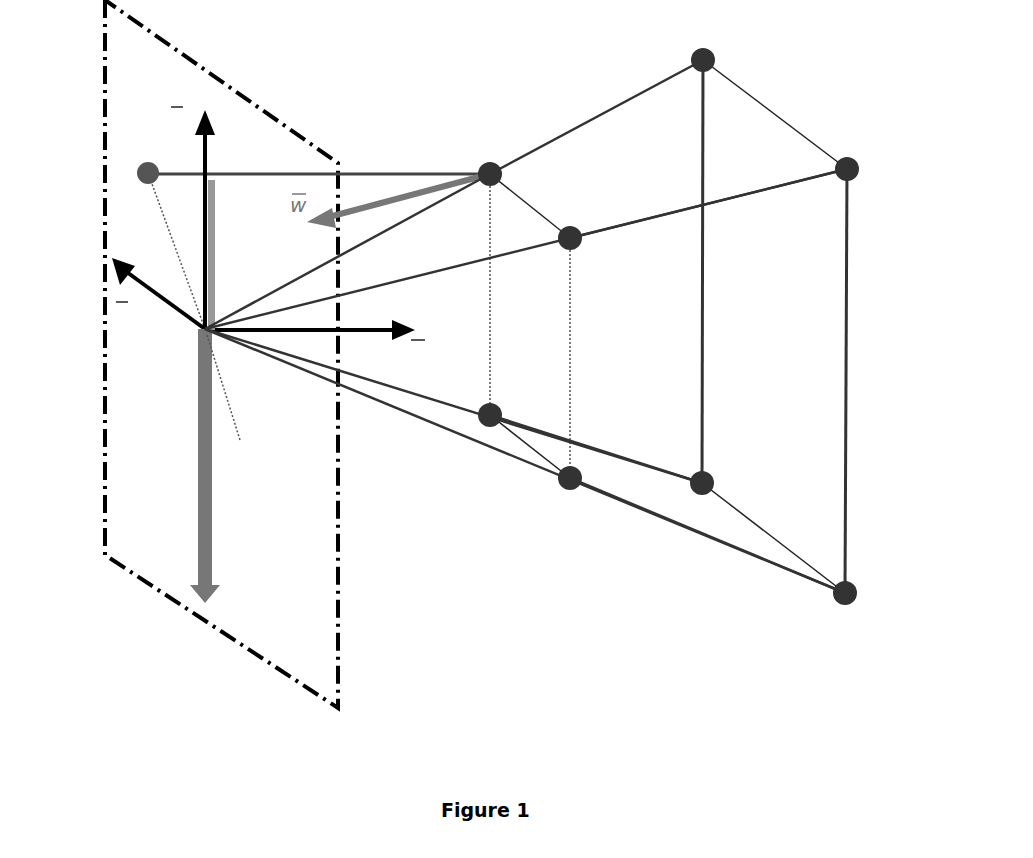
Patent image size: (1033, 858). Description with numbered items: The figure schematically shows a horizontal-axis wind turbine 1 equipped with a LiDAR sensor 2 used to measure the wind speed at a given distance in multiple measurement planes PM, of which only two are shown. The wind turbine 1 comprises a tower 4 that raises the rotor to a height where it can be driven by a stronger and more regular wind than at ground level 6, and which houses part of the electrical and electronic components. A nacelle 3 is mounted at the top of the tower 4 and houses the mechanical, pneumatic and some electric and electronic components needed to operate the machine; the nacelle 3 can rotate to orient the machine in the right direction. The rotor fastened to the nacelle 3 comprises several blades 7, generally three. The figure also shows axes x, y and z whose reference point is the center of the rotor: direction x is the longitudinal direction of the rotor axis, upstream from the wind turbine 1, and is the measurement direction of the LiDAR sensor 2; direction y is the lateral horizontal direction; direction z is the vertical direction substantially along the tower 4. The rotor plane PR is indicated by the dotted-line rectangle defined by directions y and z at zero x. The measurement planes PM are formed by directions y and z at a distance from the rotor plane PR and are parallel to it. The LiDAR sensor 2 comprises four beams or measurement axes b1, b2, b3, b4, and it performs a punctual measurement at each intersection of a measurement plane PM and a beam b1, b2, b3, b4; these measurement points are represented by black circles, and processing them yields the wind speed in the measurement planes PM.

The wind turbine 1 is at (243, 165).
The LiDAR sensor 2 is at (190, 330).
The nacelle 3 is at (205, 347).
The tower 4 is at (210, 483).
The ground level 6 is at (203, 588).
The blades 7 is at (235, 400).
The beam b1 is at (537, 143).
The beam b2 is at (777, 183).
The beam b3 is at (668, 521).
The beam b4 is at (430, 398).
The measurement plane PM is at (535, 372).
The rotor plane PR is at (127, 575).